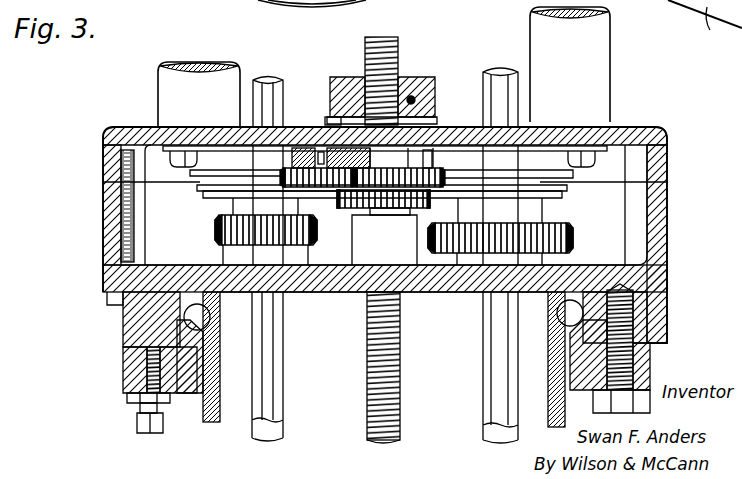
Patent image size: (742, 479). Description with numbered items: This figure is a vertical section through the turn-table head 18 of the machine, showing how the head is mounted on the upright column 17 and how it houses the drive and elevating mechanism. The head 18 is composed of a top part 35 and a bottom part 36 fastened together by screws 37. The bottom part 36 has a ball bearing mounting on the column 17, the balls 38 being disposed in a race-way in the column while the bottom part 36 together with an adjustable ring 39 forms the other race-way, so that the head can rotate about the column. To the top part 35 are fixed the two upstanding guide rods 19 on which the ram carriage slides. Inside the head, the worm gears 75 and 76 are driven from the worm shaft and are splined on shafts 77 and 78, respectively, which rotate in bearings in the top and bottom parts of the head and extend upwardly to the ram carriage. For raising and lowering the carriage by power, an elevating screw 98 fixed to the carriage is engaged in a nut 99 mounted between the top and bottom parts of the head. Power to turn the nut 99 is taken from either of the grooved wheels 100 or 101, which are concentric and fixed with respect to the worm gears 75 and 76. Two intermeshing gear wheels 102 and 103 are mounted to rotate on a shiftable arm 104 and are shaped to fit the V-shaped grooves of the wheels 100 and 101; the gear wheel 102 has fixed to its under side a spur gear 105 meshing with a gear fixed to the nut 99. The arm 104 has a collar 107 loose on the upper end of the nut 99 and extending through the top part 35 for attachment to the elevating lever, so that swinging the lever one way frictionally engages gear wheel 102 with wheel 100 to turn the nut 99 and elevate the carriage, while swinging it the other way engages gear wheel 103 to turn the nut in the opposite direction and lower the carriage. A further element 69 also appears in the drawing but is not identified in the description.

The guide rods 19 is at (166, 87).
The shaft 78 is at (264, 77).
The nut 99 is at (358, 78).
The elevating screw 98 is at (398, 42).
The collar 107 is at (420, 80).
The shaft 77 is at (494, 70).
The arm 69 is at (705, 28).
The shiftable arm 104 is at (327, 120).
The gear wheel 103 is at (293, 163).
The gear wheel 102 is at (432, 164).
The grooved wheel 101 is at (210, 189).
The grooved wheel 100 is at (568, 188).
The top part 35 is at (663, 152).
The bottom part 36 is at (663, 207).
The turn-table head 18 is at (667, 245).
The worm gear 76 is at (215, 228).
The spur gear 105 is at (367, 215).
The worm gear 75 is at (574, 230).
The screws 37 is at (107, 308).
The balls 38 is at (222, 316).
The adjustable ring 39 is at (187, 385).
The column 17 is at (548, 410).